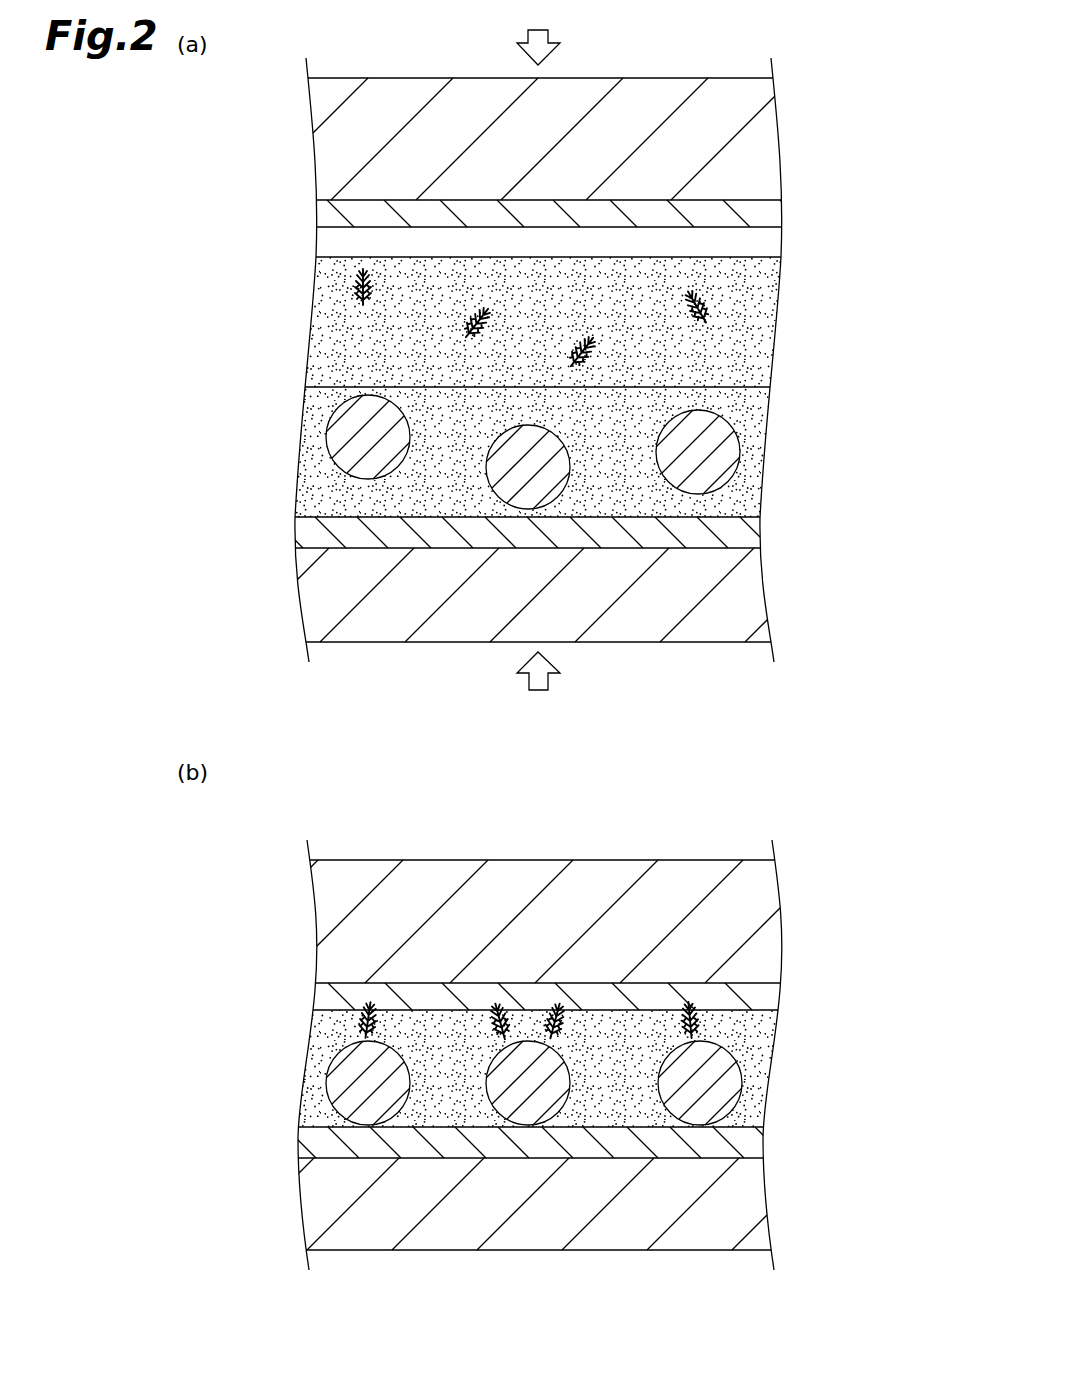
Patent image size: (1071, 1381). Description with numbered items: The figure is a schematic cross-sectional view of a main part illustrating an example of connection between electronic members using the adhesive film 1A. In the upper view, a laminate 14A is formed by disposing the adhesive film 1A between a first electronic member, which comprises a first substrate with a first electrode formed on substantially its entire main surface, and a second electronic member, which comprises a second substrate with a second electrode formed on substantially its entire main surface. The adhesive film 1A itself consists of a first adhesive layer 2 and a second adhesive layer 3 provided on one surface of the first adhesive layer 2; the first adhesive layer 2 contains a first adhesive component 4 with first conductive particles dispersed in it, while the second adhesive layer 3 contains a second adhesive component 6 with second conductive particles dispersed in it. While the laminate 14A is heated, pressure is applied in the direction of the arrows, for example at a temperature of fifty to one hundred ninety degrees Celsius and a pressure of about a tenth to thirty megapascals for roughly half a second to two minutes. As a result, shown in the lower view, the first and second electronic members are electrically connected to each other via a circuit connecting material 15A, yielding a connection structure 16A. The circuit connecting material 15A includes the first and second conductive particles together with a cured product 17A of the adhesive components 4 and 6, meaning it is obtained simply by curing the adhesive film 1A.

The adhesive film 1A is at (597, 387).
The first adhesive layer 2 is at (572, 322).
The second adhesive layer 3 is at (572, 451).
The first adhesive component 4 is at (773, 337).
The second adhesive component 6 is at (743, 402).
The laminate 14A is at (856, 90).
The circuit connecting material 15A is at (592, 1056).
The connection structure 16A is at (856, 814).
The cured product 17A is at (770, 1045).